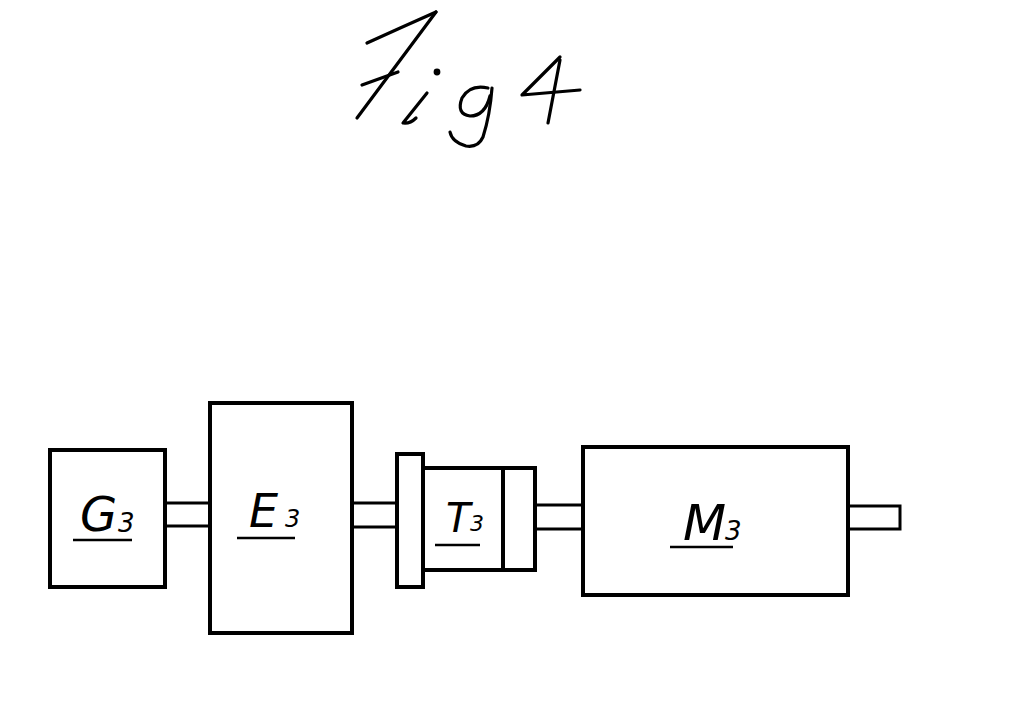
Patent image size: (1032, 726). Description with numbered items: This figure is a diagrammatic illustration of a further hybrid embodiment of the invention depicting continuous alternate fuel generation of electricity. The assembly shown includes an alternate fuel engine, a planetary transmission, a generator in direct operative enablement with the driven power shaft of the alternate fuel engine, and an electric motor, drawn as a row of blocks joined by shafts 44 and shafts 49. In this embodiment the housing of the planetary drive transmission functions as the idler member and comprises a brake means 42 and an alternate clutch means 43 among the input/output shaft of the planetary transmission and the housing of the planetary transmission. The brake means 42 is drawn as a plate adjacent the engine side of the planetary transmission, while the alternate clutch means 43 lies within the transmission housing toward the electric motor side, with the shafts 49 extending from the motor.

The brake means 42 is at (409, 462).
The alternate clutch means 43 is at (513, 560).
The shaft connecting generator, engine and clutch 44 is at (178, 517).
The motor shaft 49 is at (557, 503).